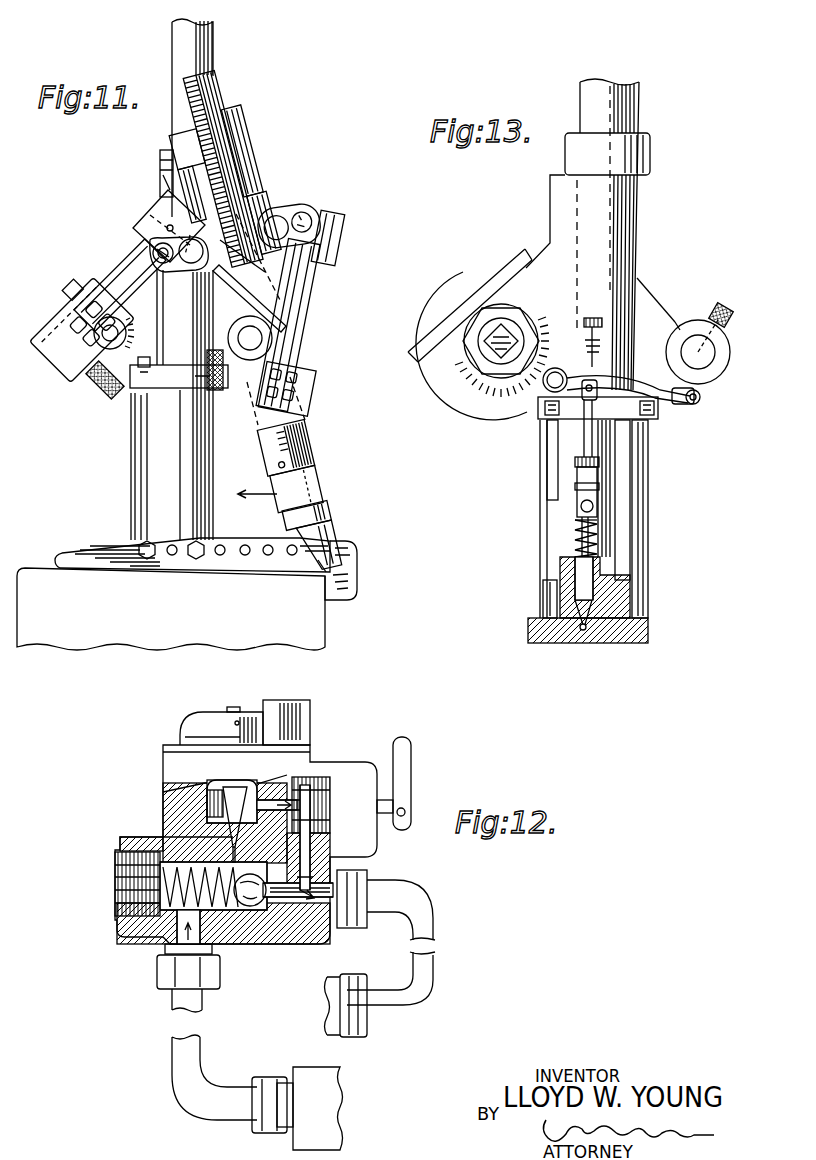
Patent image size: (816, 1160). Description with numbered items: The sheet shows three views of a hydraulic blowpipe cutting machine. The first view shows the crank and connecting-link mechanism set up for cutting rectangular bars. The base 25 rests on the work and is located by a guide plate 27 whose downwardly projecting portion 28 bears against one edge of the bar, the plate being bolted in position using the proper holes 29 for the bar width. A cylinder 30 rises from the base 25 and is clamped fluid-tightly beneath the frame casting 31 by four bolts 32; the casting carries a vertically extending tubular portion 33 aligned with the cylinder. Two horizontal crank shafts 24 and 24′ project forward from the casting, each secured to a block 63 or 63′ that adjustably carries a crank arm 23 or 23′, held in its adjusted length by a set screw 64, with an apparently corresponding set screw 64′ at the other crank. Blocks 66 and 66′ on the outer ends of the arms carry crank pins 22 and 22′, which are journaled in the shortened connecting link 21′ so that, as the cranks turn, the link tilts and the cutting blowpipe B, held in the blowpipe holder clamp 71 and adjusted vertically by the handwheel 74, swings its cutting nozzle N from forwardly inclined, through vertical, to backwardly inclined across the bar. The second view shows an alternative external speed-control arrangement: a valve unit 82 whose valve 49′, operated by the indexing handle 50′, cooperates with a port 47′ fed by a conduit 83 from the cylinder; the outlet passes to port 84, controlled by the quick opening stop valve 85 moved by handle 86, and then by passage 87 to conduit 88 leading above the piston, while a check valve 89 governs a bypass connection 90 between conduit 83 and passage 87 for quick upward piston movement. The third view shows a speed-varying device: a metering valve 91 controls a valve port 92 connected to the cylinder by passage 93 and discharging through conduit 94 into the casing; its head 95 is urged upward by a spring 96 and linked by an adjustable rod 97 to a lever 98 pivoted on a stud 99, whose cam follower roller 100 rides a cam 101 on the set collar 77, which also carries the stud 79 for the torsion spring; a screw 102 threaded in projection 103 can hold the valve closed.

In FIG. 11, the tubular portion 33 is at (176, 33).
In FIG. 11, the blowpipe holder clamp 71 is at (240, 130).
In FIG. 11, the handwheel 74 is at (165, 152).
In FIG. 11, the frame casting 31 is at (172, 362).
In FIG. 13, the frame casting 31 is at (632, 208).
In FIG. 11, the crankpin block 66 is at (148, 217).
In FIG. 11, the crank pin 22 is at (190, 260).
In FIG. 11, the crank arm 23 is at (128, 258).
In FIG. 11, the block 63 is at (62, 305).
In FIG. 11, the crank shaft 24 is at (84, 370).
In FIG. 13, the crank shaft 24 is at (706, 350).
In FIG. 11, the set screw 64 is at (98, 388).
In FIG. 11, the knurled nut 64′ is at (215, 362).
In FIG. 11, the connecting link 21′ is at (262, 215).
In FIG. 11, the crank pin 22′ is at (282, 220).
In FIG. 11, the block 66′ is at (338, 227).
In FIG. 11, the crank arm 23′ is at (318, 280).
In FIG. 11, the block 63′ is at (302, 376).
In FIG. 11, the crank shaft 24′ is at (302, 340).
In FIG. 13, the crank shaft 24′ is at (488, 342).
In FIG. 11, the cylinder 30 is at (156, 465).
In FIG. 13, the cylinder 30 is at (548, 558).
In FIG. 11, the bolts 32 is at (138, 500).
In FIG. 13, the bolts 32 is at (648, 508).
In FIG. 11, the cutting blowpipe B is at (316, 452).
In FIG. 11, the base 25 is at (160, 540).
In FIG. 13, the base 25 is at (652, 631).
In FIG. 12, the base 25 is at (322, 1094).
In FIG. 11, the holes 29 is at (246, 548).
In FIG. 11, the guide plate 27 is at (348, 565).
In FIG. 11, the downwardly projecting portion 28 is at (336, 606).
In FIG. 11, the cutting nozzle N is at (318, 533).
In FIG. 13, the screw 102 is at (594, 316).
In FIG. 13, the projection 103 is at (586, 342).
In FIG. 13, the stud 79 is at (716, 304).
In FIG. 13, the set collar 77 is at (722, 338).
In FIG. 13, the cam follower roller 100 is at (702, 396).
In FIG. 13, the cam 101 is at (685, 402).
In FIG. 13, the stud 99 is at (548, 391).
In FIG. 13, the lever 98 is at (664, 404).
In FIG. 13, the adjustable rod 97 is at (590, 440).
In FIG. 13, the head 95 is at (578, 507).
In FIG. 13, the spring 96 is at (573, 531).
In FIG. 13, the passage 93 is at (584, 640).
In FIG. 13, the metering valve 91 is at (572, 590).
In FIG. 13, the valve port 92 is at (545, 610).
In FIG. 13, the conduit 94 is at (625, 467).
In FIG. 12, the indexing handle 50′ is at (302, 718).
In FIG. 12, the handle 86 is at (406, 750).
In FIG. 12, the quick opening stop valve 85 is at (306, 790).
In FIG. 12, the valve 49′ is at (228, 792).
In FIG. 12, the port 84 is at (252, 782).
In FIG. 12, the valve unit 82 is at (160, 796).
In FIG. 12, the port 47′ is at (220, 832).
In FIG. 12, the passage 87 is at (308, 860).
In FIG. 12, the check valve 89 is at (250, 906).
In FIG. 12, the bypass connection 90 is at (290, 902).
In FIG. 12, the conduit 88 is at (425, 972).
In FIG. 12, the conduit 83 is at (185, 1045).